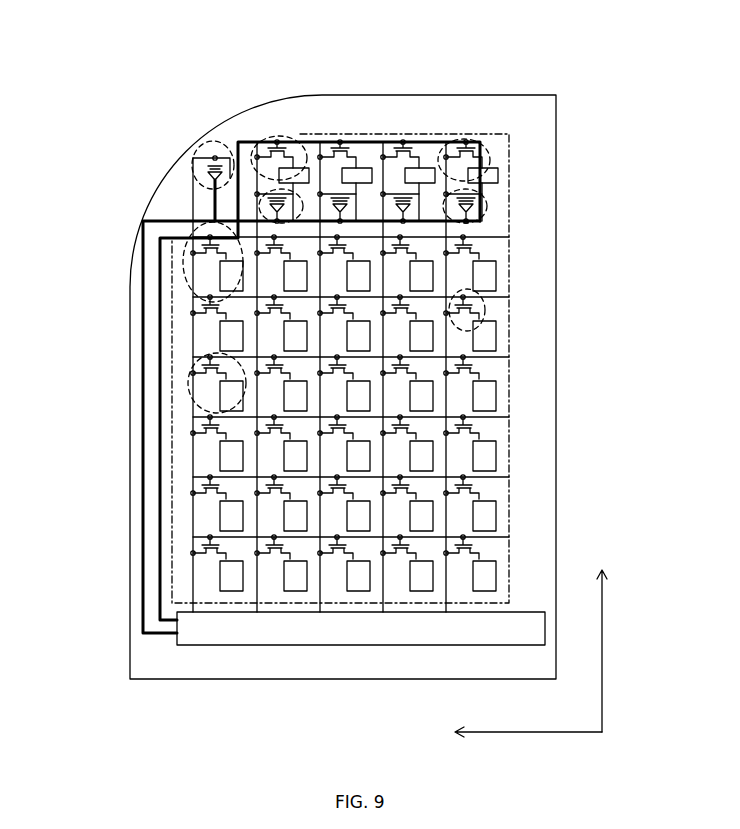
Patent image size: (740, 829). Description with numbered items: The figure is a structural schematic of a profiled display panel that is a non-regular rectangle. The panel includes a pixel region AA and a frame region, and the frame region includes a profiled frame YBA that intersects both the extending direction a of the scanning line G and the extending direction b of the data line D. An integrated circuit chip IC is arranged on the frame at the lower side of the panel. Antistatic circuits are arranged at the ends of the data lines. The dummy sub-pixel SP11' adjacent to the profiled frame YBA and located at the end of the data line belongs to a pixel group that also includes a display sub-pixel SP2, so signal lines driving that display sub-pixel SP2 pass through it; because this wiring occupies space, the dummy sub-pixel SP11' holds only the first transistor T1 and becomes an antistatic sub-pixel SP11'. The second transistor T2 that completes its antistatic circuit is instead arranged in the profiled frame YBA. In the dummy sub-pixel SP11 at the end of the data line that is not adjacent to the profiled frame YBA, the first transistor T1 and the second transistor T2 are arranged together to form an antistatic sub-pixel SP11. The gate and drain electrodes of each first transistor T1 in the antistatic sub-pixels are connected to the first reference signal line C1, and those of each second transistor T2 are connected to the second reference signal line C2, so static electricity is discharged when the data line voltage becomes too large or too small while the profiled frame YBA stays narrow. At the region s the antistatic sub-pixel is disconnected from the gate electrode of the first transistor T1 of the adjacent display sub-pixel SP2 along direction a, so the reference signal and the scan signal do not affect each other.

The profiled frame YBA is at (178, 173).
The pixel region AA is at (387, 133).
The integrated circuit chip IC is at (361, 628).
The first reference signal line C1 is at (160, 590).
The second reference signal line C2 is at (143, 268).
The data line D is at (447, 590).
The scanning line G is at (500, 417).
The display sub-pixel SP2 is at (205, 385).
The antistatic sub-pixel adjacent to the profiled frame SP11' is at (150, 293).
The antistatic sub-pixel SP11 is at (388, 84).
The first transistor T1 is at (480, 147).
The second transistor T2 is at (480, 213).
The region S s is at (218, 143).
The first direction a is at (518, 737).
The second direction b is at (601, 638).